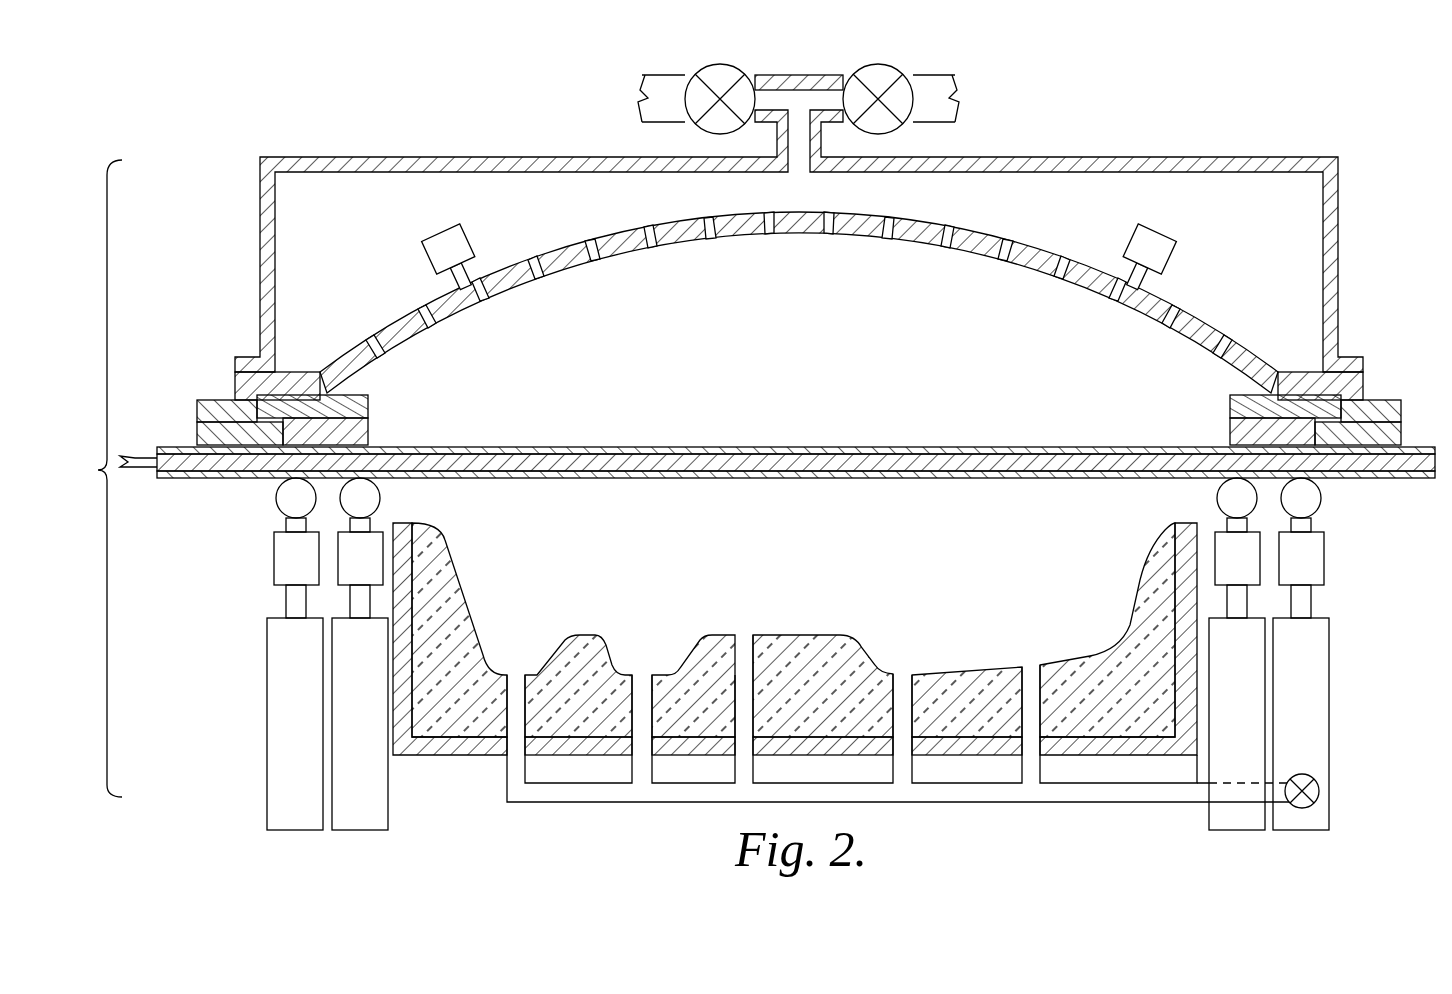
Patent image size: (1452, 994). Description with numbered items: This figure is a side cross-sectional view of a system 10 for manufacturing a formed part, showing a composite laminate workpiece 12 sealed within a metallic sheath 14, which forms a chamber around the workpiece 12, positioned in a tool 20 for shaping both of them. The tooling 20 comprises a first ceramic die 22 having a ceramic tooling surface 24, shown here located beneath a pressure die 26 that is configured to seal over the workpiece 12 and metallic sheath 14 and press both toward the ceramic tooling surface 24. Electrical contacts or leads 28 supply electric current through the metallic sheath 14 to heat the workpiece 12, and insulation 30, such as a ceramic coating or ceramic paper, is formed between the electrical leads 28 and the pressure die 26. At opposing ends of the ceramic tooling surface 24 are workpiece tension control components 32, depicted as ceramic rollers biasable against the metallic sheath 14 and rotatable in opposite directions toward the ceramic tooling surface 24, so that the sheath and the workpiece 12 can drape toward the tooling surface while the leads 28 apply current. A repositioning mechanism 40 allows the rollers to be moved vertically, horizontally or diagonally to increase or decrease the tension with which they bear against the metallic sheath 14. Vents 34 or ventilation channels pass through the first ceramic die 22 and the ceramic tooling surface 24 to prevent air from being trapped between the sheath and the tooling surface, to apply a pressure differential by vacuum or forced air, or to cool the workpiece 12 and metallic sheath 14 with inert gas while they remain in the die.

The system 10 is at (228, 145).
The workpiece 12 is at (778, 462).
The metallic sheath 14 is at (697, 452).
The tool 20 is at (93, 478).
The first ceramic die 22 is at (571, 650).
The ceramic tooling surface 24 is at (790, 632).
The pressure die 26 is at (1098, 185).
The electrical leads 28 is at (355, 432).
The insulation 30 is at (303, 400).
The workpiece tension control components 32 is at (372, 495).
The vents 34 is at (905, 690).
The repositioning mechanism 40 is at (278, 658).